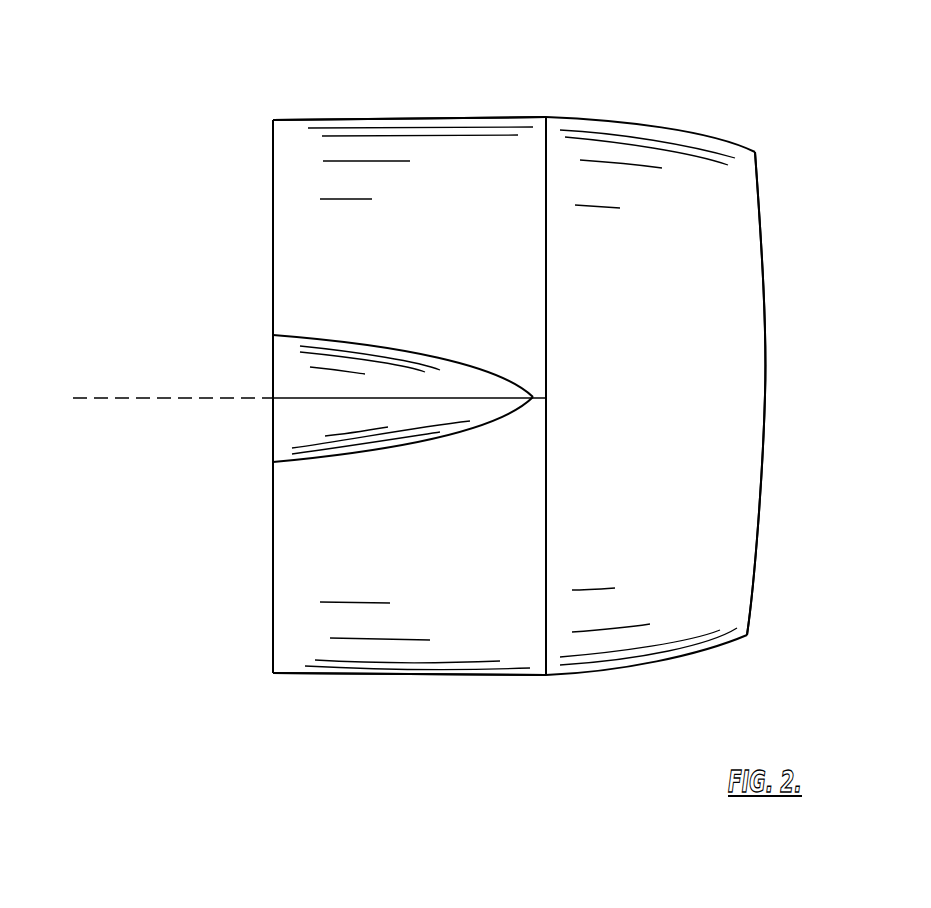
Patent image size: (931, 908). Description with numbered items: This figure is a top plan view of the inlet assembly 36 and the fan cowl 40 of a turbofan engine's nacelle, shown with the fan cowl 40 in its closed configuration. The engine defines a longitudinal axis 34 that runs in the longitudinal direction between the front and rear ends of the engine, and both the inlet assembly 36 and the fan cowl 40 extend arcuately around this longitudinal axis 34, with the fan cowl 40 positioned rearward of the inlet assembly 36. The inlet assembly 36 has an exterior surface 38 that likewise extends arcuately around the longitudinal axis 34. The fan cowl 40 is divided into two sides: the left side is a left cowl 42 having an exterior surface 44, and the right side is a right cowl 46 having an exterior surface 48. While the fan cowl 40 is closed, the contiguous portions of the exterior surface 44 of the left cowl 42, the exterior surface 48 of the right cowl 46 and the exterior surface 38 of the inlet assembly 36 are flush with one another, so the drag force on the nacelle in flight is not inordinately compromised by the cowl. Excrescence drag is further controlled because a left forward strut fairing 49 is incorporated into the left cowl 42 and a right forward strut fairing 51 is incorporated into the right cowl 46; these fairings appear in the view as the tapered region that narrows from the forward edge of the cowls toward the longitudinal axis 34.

The longitudinal axis 34 is at (73, 398).
The inlet assembly 36 is at (766, 332).
The exterior surface 38 is at (644, 377).
The fan cowl 40 is at (290, 677).
The left cowl 42 is at (455, 117).
The exterior surface 44 is at (430, 288).
The right cowl 46 is at (425, 677).
The exterior surface 48 is at (430, 552).
The left forward strut fairing 49 is at (287, 372).
The right forward strut fairing 51 is at (290, 426).